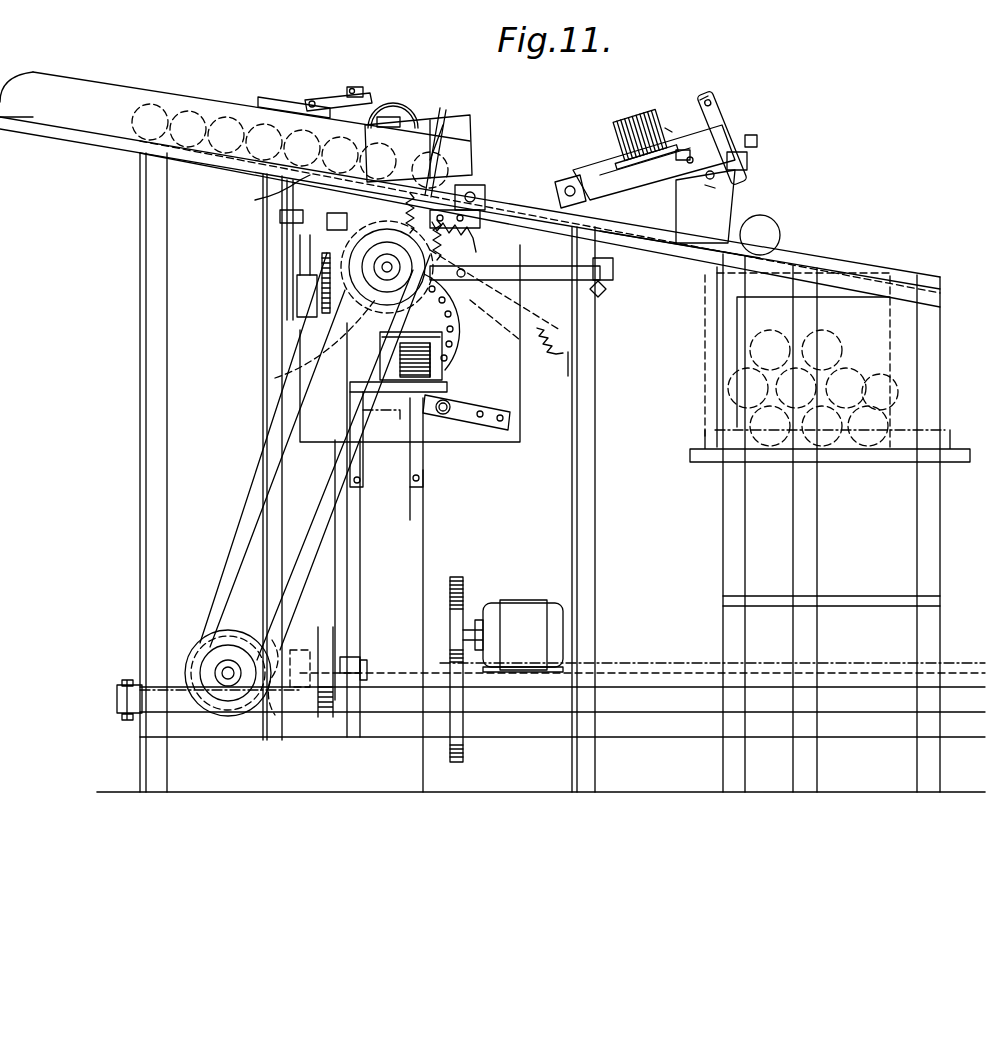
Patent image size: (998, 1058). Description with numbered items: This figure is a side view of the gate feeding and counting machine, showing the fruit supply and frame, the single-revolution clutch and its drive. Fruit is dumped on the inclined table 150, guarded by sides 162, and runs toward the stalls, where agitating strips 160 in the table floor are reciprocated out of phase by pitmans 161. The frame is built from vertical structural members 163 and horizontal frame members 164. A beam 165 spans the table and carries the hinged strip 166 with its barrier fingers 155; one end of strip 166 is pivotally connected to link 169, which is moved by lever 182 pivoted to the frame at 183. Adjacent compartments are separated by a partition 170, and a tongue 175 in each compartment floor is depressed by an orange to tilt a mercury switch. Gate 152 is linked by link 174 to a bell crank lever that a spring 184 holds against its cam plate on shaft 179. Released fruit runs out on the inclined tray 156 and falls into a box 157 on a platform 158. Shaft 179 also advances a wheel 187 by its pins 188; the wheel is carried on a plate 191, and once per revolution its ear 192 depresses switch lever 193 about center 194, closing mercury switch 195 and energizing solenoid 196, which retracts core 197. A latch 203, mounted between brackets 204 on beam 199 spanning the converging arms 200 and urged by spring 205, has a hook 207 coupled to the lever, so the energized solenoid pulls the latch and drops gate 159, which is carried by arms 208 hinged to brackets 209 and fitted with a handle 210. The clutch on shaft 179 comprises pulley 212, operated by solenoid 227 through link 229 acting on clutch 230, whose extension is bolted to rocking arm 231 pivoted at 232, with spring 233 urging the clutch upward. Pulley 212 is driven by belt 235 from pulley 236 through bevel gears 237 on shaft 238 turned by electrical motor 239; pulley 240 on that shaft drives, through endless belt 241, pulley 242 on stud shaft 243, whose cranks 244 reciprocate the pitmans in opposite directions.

The inclined table 150 is at (86, 134).
The gate 152 is at (470, 135).
The barrier fingers 155 is at (392, 98).
The inclined tray 156 is at (655, 243).
The box 157 is at (893, 342).
The table or platform 158 is at (903, 450).
The gate 159 is at (748, 160).
The agitating strips 160 is at (258, 196).
The pitmans 161 is at (285, 232).
The sides 162 is at (104, 90).
The vertical structural members 163 is at (262, 418).
The horizontal frame members 164 is at (533, 235).
The beam 165 is at (265, 98).
The strip 166 is at (323, 98).
The link 169 is at (368, 94).
The partition 170 is at (432, 140).
The link 174 is at (444, 132).
The tongue 175 is at (402, 147).
The shaft 179 is at (343, 457).
The lever 182 is at (512, 280).
The pivot 183 is at (598, 270).
The spring 184 is at (535, 355).
The wheel 187 is at (466, 340).
The pins 188 is at (462, 326).
The plate 191 is at (415, 507).
The ear 192 is at (452, 368).
The switch lever 193 is at (419, 387).
The center 194 is at (512, 404).
The mercury switch 195 is at (375, 439).
The solenoid 196 is at (620, 118).
The core 197 is at (665, 122).
The beam 199 is at (700, 178).
The converging arms 200 is at (740, 205).
The latch 203 is at (735, 110).
The brackets 204 is at (712, 100).
The spring 205 is at (735, 182).
The hook 207 is at (680, 145).
The arms 208 is at (630, 175).
The brackets 209 is at (566, 175).
The handle 210 is at (758, 140).
The pulley 212 is at (300, 240).
The solenoid 227 is at (413, 430).
The link 229 is at (491, 240).
The clutch 230 is at (276, 378).
The rocking arm 231 is at (468, 300).
The pivot 232 is at (606, 289).
The spring 233 is at (468, 200).
The belt 235 is at (240, 522).
The pulley 236 is at (228, 716).
The bevel gears 237 is at (272, 725).
The shaft 238 is at (392, 700).
The electrical motor 239 is at (515, 603).
The pulley 240 is at (335, 640).
The endless belt 241 is at (338, 553).
The pulley 242 is at (300, 258).
The stud shaft 243 is at (290, 313).
The cranks 244 is at (297, 292).